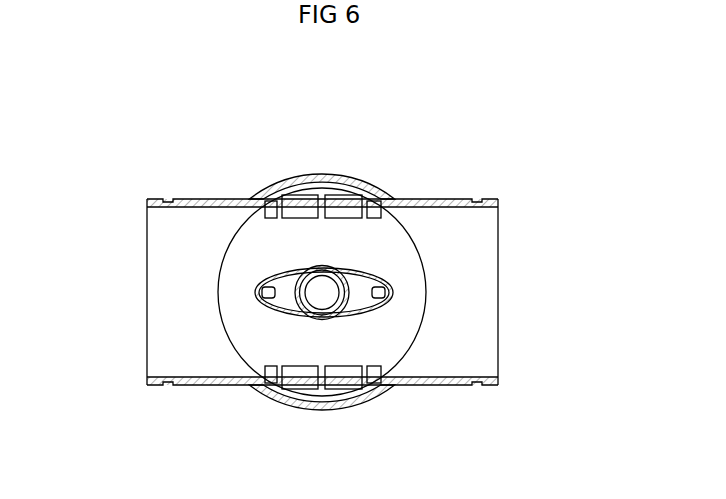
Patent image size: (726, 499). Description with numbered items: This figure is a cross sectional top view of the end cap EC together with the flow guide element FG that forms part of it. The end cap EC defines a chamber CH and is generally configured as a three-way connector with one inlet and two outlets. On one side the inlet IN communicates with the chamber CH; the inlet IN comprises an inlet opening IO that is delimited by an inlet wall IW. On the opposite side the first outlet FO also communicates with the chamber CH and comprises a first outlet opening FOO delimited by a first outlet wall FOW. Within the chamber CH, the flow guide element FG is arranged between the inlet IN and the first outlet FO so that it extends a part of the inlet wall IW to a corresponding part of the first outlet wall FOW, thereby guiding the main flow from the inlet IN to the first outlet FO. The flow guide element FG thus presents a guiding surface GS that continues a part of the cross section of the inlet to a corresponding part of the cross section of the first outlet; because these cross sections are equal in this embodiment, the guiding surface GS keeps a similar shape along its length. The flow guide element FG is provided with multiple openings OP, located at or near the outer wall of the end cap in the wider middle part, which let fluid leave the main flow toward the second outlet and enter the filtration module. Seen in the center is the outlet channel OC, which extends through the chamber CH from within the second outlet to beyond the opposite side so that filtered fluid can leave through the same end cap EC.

The inlet IN is at (133, 218).
The inlet opening IO is at (148, 268).
The inlet wall IW is at (150, 384).
The end cap EC is at (435, 199).
The first outlet FO is at (505, 237).
The first outlet opening FOO is at (499, 363).
The first outlet wall FOW is at (480, 383).
The chamber CH is at (197, 352).
The guiding surface GS is at (270, 340).
The openings OP is at (371, 217).
The flow guide element FG is at (400, 286).
The outlet channel OC is at (323, 293).